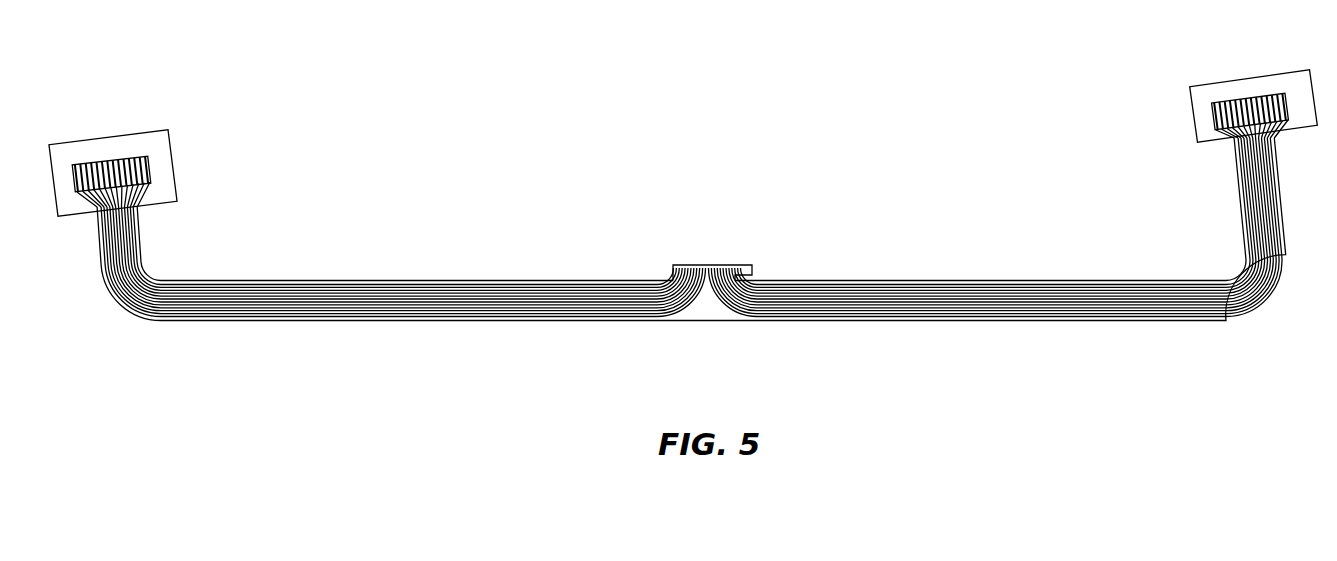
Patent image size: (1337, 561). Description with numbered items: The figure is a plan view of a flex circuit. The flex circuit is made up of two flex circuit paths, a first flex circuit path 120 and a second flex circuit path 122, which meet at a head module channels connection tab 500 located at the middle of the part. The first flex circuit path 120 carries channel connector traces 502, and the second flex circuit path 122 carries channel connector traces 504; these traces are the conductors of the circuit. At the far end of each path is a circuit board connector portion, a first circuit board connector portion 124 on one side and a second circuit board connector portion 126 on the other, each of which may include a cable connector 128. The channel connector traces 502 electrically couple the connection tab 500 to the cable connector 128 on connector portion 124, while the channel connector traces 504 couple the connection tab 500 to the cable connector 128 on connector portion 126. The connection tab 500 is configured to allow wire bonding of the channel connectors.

The first flex circuit path 120 is at (327, 330).
The second flex circuit path 122 is at (1039, 333).
The first circuit board connector portion 124 is at (112, 135).
The second circuit board connector portion 126 is at (1260, 75).
The cable connector 128 is at (152, 170).
The head module channels connection tab 500 is at (712, 265).
The channel connector traces 502 is at (485, 281).
The channel connector traces 504 is at (917, 281).